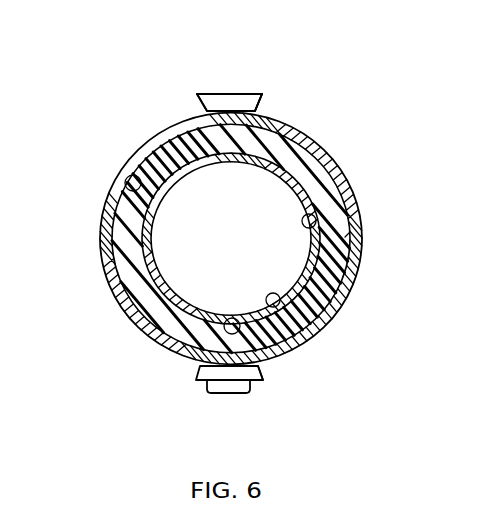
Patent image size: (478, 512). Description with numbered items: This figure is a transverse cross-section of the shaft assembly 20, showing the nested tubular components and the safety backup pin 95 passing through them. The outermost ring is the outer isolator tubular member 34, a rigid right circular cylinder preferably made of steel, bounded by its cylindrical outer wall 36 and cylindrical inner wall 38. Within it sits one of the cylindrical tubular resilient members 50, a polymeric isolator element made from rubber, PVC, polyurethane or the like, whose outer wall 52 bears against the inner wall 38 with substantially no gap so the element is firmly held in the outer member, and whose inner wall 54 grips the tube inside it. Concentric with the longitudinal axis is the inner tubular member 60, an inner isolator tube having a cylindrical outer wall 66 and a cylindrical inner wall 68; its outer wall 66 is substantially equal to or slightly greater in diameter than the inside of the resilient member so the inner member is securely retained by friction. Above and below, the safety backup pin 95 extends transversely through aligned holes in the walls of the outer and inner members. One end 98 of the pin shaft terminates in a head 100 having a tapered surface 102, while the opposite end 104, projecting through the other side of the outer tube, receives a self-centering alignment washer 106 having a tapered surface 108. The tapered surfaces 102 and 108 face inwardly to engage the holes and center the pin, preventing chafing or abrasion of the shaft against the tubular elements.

The shaft assembly 20 is at (345, 147).
The outer isolator tubular member 34 is at (153, 133).
The cylindrical outer wall 36 is at (308, 136).
The cylindrical inner wall 38 is at (127, 187).
The cylindrical tubular resilient member 50 is at (322, 182).
The outer wall 52 is at (345, 237).
The inner wall 54 is at (316, 225).
The inner tubular member 60 is at (331, 279).
The cylindrical outer wall 66 is at (233, 318).
The cylindrical inner wall 68 is at (300, 312).
The safety backup pin 95 is at (204, 89).
The one end 98 is at (231, 93).
The head 100 is at (229, 102).
The tapered surface 102 is at (263, 95).
The opposite end 104 is at (238, 388).
The self-centering alignment washer 106 is at (196, 386).
The tapered surface 108 is at (262, 371).